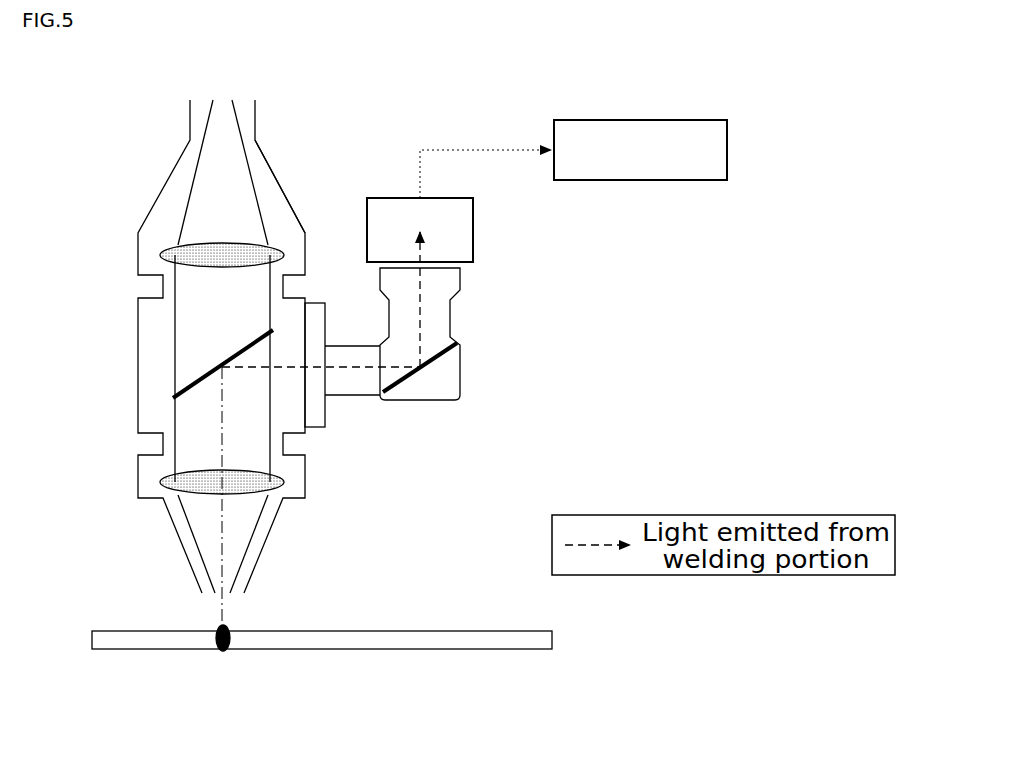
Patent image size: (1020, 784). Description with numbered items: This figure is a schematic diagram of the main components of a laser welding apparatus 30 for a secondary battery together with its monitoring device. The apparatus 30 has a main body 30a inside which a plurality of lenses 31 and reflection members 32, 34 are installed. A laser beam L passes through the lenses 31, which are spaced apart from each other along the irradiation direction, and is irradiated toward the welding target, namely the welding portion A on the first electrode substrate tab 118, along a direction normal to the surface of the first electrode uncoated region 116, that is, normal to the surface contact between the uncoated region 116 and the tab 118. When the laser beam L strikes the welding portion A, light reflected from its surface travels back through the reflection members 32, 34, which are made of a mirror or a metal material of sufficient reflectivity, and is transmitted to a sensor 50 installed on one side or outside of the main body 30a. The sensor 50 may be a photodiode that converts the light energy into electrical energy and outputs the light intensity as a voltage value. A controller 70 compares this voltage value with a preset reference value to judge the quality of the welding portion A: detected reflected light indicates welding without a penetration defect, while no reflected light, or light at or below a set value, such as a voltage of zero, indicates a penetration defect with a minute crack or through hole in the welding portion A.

The laser welding apparatus 30 is at (140, 177).
The main body 30a is at (270, 180).
The laser beam L is at (225, 150).
The lenses 31 is at (160, 255).
The reflection member 32 is at (178, 380).
The reflection member 34 is at (462, 352).
The sensor 50 is at (478, 228).
The controller 70 is at (640, 119).
The first electrode uncoated region 116 is at (575, 636).
The first electrode substrate tab 118 is at (398, 639).
The welding portion A is at (232, 653).